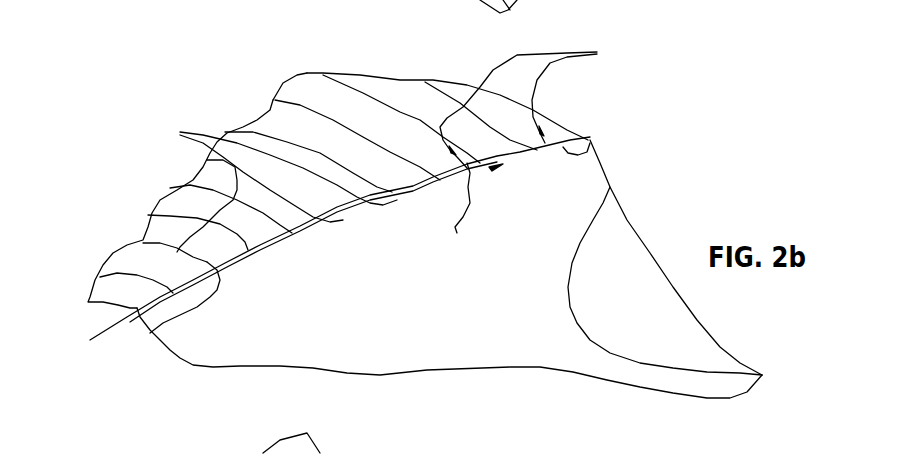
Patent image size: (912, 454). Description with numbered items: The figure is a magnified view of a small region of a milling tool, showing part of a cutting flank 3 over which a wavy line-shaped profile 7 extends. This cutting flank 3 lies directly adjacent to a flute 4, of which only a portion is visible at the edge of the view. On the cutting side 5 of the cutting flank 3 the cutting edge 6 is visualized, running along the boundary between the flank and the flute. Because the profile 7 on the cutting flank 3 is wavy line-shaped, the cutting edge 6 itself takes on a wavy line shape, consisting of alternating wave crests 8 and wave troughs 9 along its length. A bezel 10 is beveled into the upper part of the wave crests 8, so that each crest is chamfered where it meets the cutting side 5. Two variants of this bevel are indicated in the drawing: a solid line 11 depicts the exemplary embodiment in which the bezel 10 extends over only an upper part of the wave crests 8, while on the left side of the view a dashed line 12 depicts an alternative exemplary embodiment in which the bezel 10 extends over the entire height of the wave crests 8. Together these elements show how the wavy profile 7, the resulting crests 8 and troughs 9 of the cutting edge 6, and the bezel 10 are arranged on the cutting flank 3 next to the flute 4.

The cutting flank 3 is at (320, 73).
The flute 4 is at (422, 357).
The cutting side 5 is at (523, 171).
The cutting edge 6 is at (279, 238).
The wavy line-shaped profile 7 is at (375, 120).
The wave crests 8 is at (527, 104).
The wave troughs 9 is at (412, 189).
The bezel 10 is at (274, 171).
The solid line 11 is at (590, 137).
The dashed line 12 is at (150, 333).